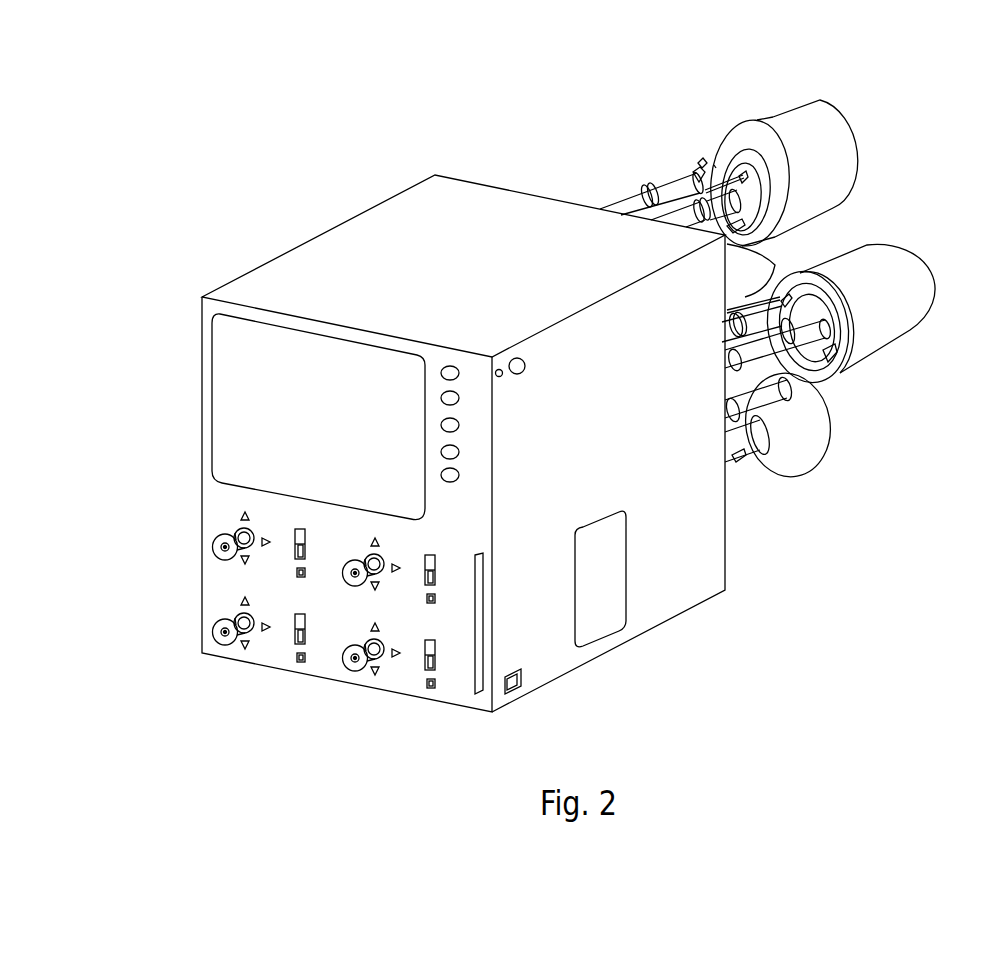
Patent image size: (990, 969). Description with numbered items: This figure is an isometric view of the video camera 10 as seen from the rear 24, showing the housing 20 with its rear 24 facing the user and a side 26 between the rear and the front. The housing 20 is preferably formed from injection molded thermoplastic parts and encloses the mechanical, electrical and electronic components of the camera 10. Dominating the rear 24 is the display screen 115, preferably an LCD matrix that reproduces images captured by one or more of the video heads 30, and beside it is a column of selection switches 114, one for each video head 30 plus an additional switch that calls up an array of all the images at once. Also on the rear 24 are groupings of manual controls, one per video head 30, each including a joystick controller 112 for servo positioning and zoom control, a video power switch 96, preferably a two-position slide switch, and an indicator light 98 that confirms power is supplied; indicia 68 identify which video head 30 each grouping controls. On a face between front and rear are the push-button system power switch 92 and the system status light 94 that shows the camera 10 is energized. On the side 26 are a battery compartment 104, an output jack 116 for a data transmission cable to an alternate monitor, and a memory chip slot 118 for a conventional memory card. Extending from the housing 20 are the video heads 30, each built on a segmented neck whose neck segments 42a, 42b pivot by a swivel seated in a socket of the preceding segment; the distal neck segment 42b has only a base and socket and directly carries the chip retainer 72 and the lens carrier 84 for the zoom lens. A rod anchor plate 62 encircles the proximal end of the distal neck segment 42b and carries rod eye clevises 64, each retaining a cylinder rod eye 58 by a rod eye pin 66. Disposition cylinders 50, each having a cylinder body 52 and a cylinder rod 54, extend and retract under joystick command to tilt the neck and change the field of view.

The camera 10 is at (160, 168).
The housing 20 is at (706, 601).
The rear 24 is at (207, 488).
The side 26 is at (651, 621).
The video head 30 is at (929, 374).
The neck segment 42a is at (800, 353).
The distal neck segment 42b is at (808, 305).
The disposition cylinder 50 is at (601, 167).
The cylinder body 52 is at (627, 204).
The cylinder rod 54 is at (668, 187).
The cylinder rod eye 58 is at (836, 358).
The rod anchor plate 62 is at (714, 163).
The rod eye clevis 64 is at (701, 160).
The rod eye pin 66 is at (694, 170).
The indicia 68 is at (215, 591).
The chip retainer 72 is at (763, 125).
The lens carrier 84 is at (858, 142).
The system power switch 92 is at (520, 357).
The system status light 94 is at (499, 368).
The video power switch 96 is at (425, 651).
The indicator light 98 is at (429, 685).
The battery compartment 104 is at (601, 613).
The joystick controller 112 is at (217, 547).
The selection switch 114 is at (473, 406).
The display screen 115 is at (210, 420).
The output jack 116 is at (518, 688).
The memory chip slot 118 is at (475, 689).